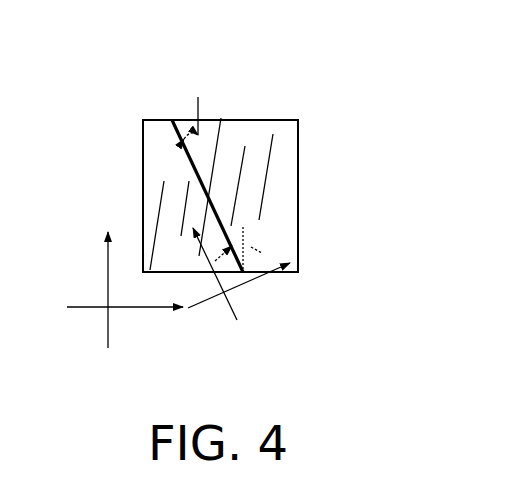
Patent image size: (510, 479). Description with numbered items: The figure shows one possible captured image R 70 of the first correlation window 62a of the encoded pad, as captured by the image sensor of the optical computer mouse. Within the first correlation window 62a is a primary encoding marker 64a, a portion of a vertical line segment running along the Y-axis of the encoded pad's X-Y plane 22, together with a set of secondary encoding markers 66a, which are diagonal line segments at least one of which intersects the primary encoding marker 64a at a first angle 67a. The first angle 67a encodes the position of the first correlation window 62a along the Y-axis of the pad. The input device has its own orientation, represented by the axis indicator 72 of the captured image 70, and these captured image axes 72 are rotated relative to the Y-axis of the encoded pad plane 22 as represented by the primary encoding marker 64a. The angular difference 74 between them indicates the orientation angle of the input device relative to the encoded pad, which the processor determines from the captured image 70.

The X-Y plane of the encoded pad 22 is at (300, 316).
The first correlation window 62a is at (277, 168).
The primary encoding marker 64a is at (183, 139).
The secondary encoding markers 66a is at (207, 225).
The first angle 67a is at (198, 97).
The captured image R 70 is at (156, 120).
The axis indicator 72 is at (205, 367).
The angular difference 74 is at (247, 244).